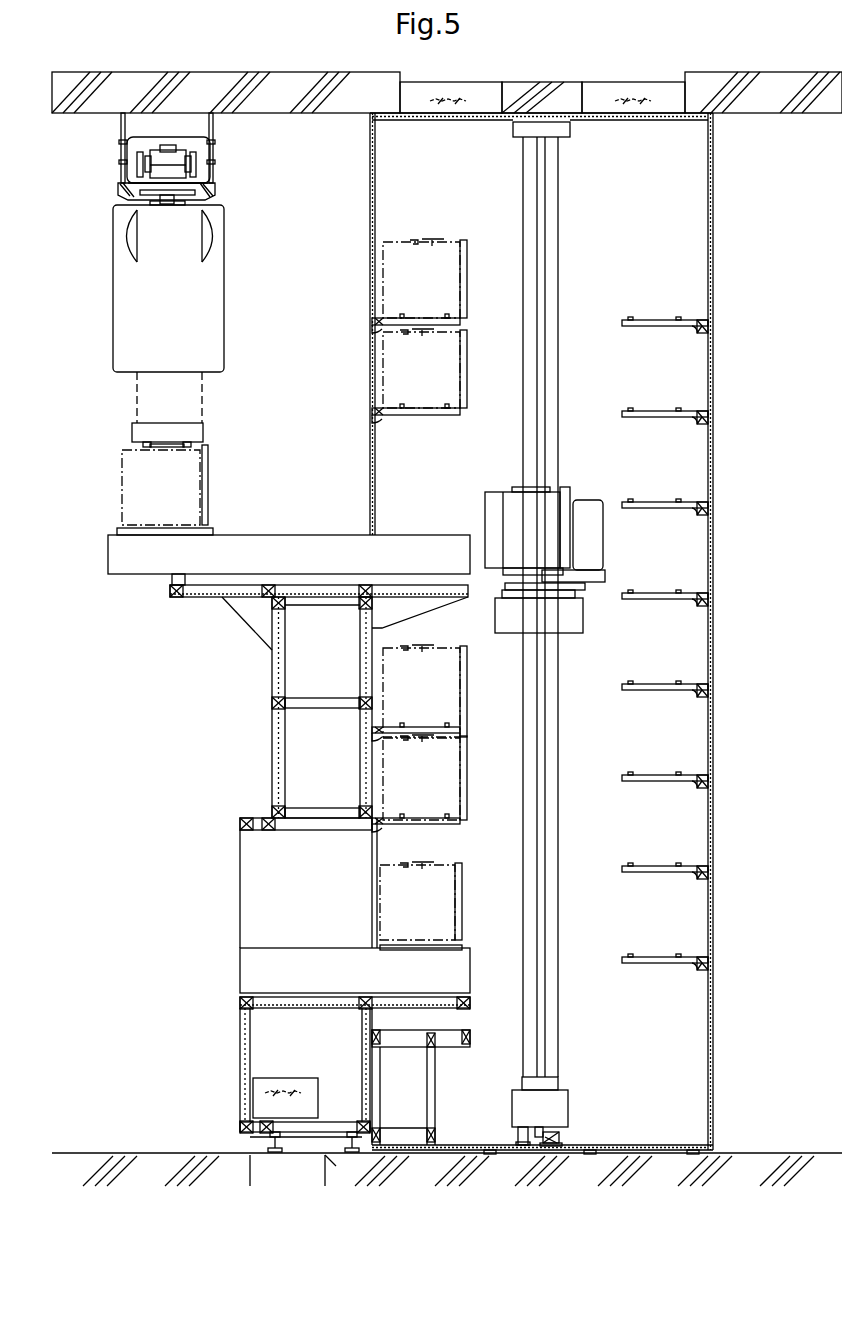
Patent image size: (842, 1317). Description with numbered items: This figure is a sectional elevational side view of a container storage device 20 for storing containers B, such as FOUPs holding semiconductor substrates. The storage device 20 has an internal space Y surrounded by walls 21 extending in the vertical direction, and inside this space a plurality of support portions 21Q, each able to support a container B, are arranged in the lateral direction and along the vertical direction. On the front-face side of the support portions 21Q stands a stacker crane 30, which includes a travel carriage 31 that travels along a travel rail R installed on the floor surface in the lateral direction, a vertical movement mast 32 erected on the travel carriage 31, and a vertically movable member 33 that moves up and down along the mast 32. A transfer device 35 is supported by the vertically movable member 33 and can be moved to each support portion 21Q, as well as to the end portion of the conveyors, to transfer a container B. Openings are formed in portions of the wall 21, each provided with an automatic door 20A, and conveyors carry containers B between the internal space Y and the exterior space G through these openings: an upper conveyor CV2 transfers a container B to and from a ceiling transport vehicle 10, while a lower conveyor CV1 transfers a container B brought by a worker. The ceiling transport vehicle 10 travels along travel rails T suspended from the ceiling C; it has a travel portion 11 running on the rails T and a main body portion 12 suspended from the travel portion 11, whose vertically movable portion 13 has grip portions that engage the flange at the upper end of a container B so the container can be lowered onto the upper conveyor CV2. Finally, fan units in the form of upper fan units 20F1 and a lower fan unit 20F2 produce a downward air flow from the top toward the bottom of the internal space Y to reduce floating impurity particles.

The ceiling C is at (213, 72).
The upper fan unit 20F1 is at (632, 82).
The lower fan unit 20F2 is at (262, 1100).
The container storage device 20 is at (741, 246).
The ceiling transport vehicle 10 is at (110, 151).
The travel portion 11 is at (202, 152).
The travel rail T is at (213, 188).
The exterior space G is at (337, 185).
The internal space Y is at (435, 185).
The main body portion 12 is at (108, 290).
The vertically movable portion 13 is at (182, 433).
The container B is at (120, 462).
The upper conveyor CV2 is at (118, 555).
The lower conveyor CV1 is at (240, 975).
The automatic door 20A is at (370, 535).
The wall 21 is at (380, 248).
The support portion 21Q is at (620, 327).
The stacker crane 30 is at (551, 634).
The travel carriage 31 is at (512, 1100).
The vertical movement mast 32 is at (558, 245).
The vertically movable member 33 is at (572, 635).
The transfer device 35 is at (577, 585).
The travel rail R is at (556, 1135).